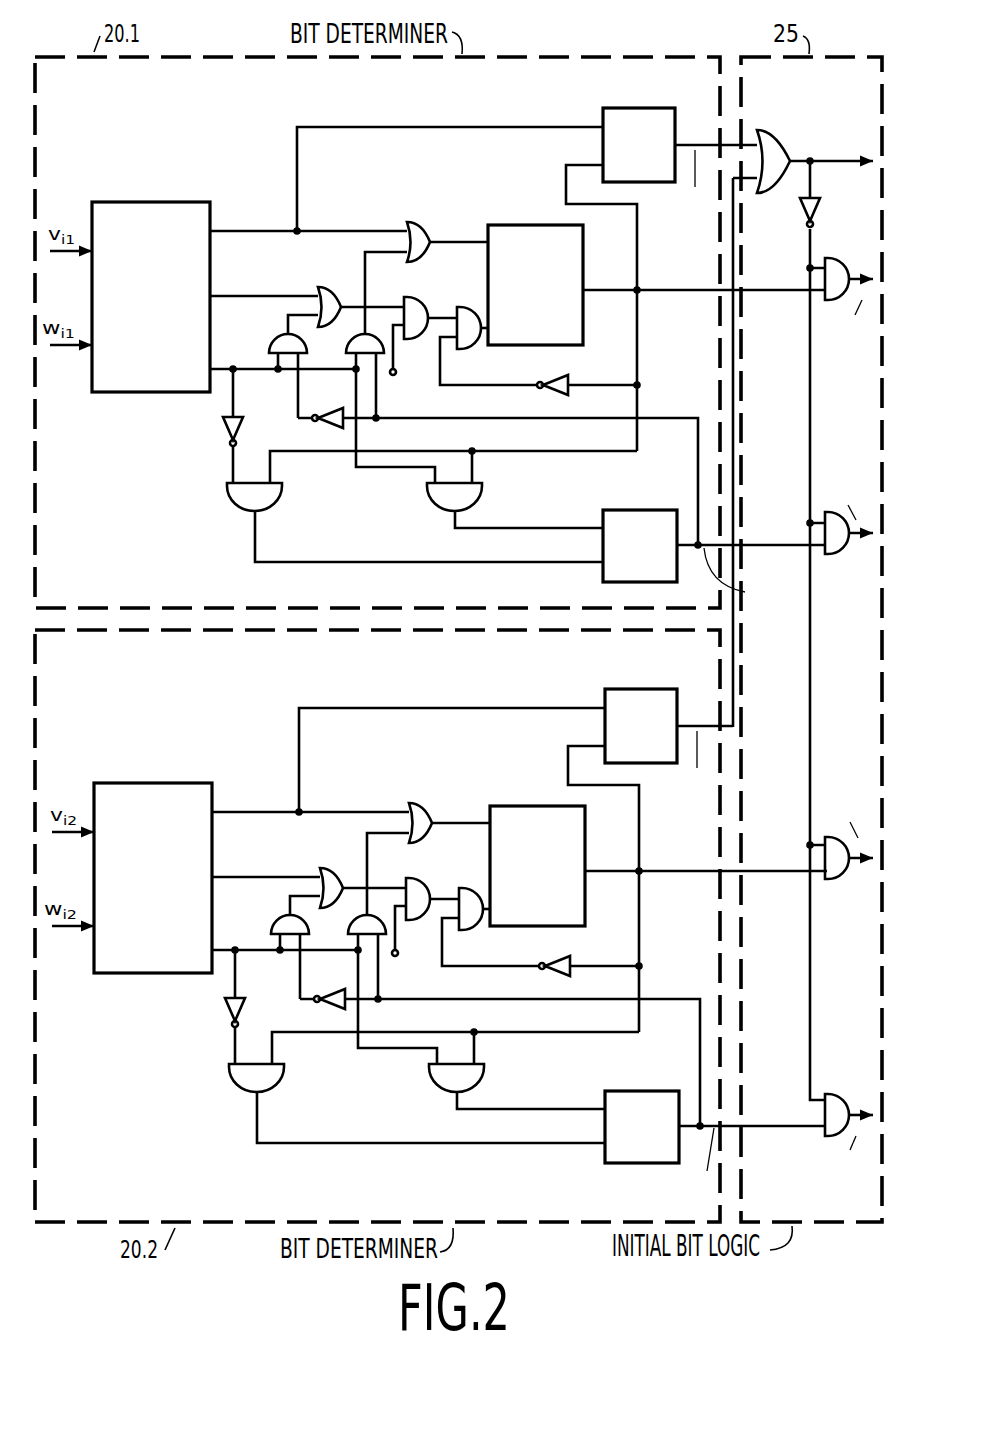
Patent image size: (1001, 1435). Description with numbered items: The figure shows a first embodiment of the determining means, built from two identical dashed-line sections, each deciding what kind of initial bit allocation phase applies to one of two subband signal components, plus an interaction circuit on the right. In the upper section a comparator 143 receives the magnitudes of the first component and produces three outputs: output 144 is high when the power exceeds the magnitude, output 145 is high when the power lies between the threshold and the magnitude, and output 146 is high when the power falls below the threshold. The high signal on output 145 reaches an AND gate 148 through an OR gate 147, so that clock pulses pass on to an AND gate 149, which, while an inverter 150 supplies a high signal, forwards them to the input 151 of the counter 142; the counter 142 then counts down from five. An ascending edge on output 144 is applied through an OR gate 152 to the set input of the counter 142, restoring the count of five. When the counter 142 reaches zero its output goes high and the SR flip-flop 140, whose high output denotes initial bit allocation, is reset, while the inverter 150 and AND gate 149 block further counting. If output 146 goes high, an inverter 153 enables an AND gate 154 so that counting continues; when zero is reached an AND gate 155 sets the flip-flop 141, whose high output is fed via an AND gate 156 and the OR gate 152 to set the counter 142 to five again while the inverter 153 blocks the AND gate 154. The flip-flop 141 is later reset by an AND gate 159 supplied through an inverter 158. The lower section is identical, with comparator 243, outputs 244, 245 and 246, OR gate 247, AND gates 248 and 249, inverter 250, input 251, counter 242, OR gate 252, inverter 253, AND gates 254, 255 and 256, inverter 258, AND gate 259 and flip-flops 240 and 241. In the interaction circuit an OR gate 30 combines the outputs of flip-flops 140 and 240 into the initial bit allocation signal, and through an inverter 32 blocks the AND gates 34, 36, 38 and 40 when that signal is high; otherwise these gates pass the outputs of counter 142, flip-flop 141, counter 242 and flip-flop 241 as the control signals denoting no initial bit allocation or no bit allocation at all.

The OR gate 30 is at (782, 132).
The inverter 32 is at (819, 208).
The AND gate 34 is at (839, 282).
The AND gate 36 is at (838, 560).
The AND gate 38 is at (840, 884).
The AND gate 40 is at (836, 1092).
The SR flip-flop 140 is at (650, 108).
The SR flip-flop 141 is at (641, 510).
The counter 142 is at (536, 225).
The comparator 143 is at (142, 202).
The output 144 is at (212, 231).
The output 145 is at (212, 296).
The output 146 is at (212, 369).
The OR gate 147 is at (330, 287).
The AND gate 148 is at (423, 329).
The AND gate 149 is at (460, 307).
The inverter 150 is at (558, 386).
The input 151 is at (488, 361).
The OR gate 152 is at (420, 215).
The inverter 153 is at (498, 461).
The AND gate 154 is at (271, 349).
The AND gate 155 is at (484, 492).
The AND gate 156 is at (350, 343).
The inverter 158 is at (222, 431).
The AND gate 159 is at (226, 494).
The SR flip-flop 240 is at (650, 844).
The SR flip-flop 241 is at (715, 1131).
The counter 242 is at (658, 849).
The comparator 243 is at (153, 858).
The output 244 is at (310, 796).
The output 245 is at (266, 859).
The output 246 is at (287, 934).
The OR gate 247 is at (362, 871).
The AND gate 248 is at (425, 910).
The AND gate 249 is at (470, 886).
The inverter 250 is at (589, 956).
The input 251 is at (490, 942).
The OR gate 252 is at (428, 843).
The inverter 253 is at (500, 1042).
The AND gate 254 is at (276, 947).
The AND gate 255 is at (517, 1083).
The AND gate 256 is at (374, 989).
The inverter 258 is at (210, 1007).
The AND gate 259 is at (390, 1100).